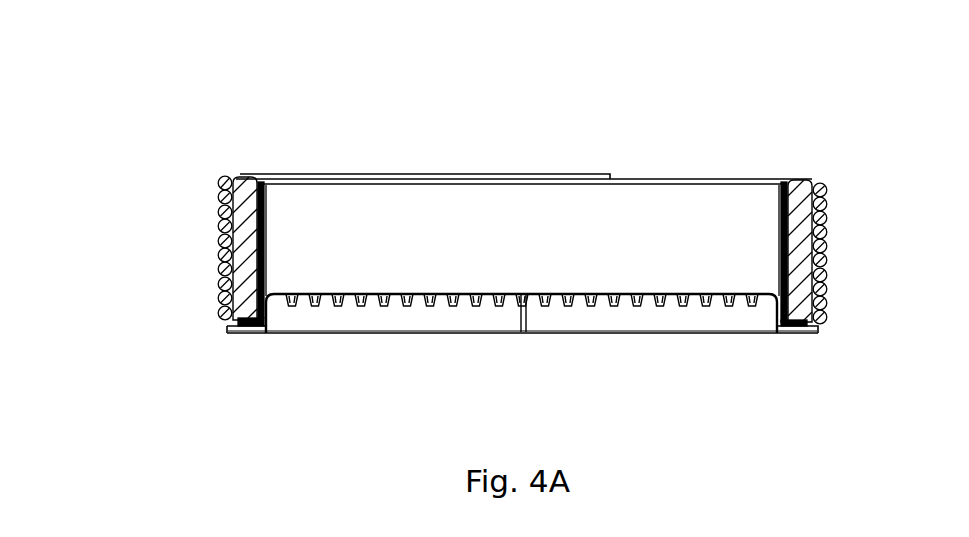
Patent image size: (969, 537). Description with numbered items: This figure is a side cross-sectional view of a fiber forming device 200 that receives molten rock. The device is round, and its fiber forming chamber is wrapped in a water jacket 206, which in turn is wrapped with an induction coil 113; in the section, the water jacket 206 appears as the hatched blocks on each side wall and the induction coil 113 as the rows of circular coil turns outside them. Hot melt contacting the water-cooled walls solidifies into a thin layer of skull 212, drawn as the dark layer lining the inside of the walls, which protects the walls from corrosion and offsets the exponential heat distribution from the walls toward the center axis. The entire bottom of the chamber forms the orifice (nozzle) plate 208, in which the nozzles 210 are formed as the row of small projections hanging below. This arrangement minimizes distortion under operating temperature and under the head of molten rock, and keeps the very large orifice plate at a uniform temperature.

The fiber forming device 200 is at (493, 114).
The induction coil 113 is at (223, 183).
The water jacket 206 is at (800, 208).
The skull 212 is at (267, 190).
The nozzles 210 is at (318, 296).
The orifice (nozzle) plate 208 is at (530, 297).